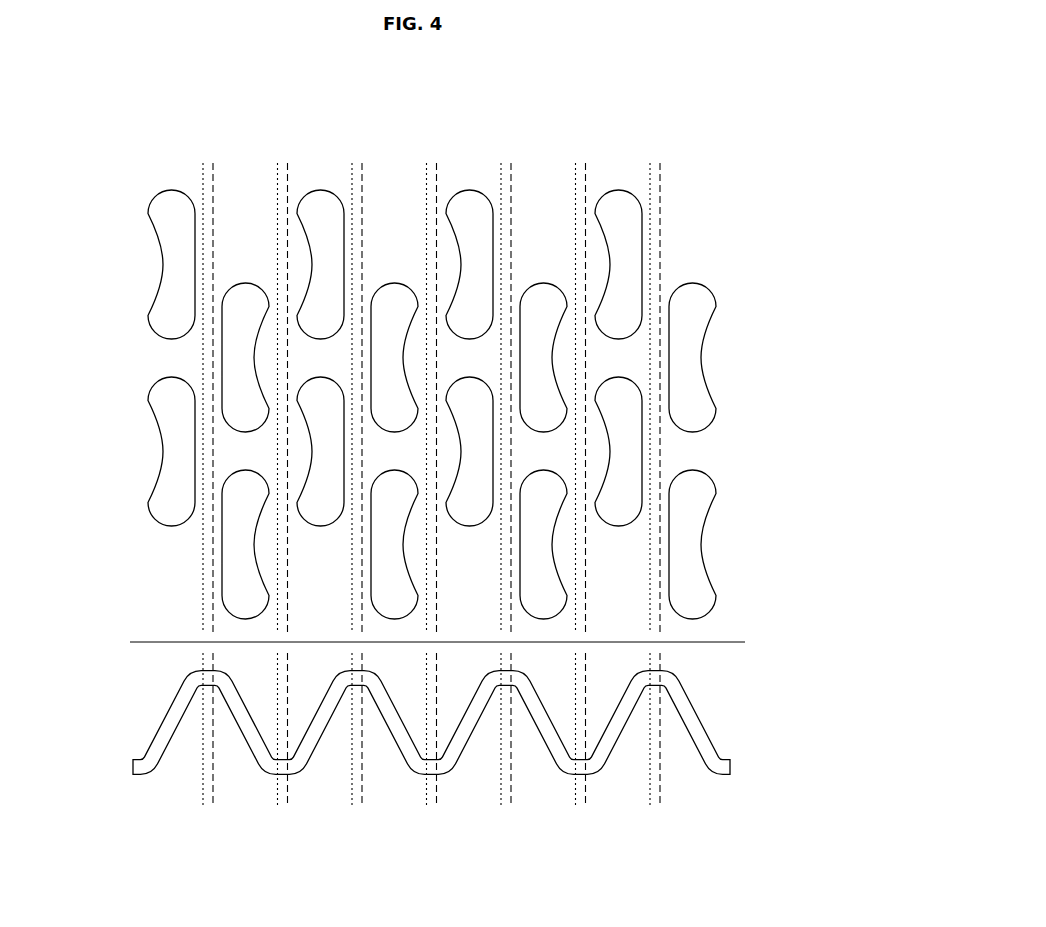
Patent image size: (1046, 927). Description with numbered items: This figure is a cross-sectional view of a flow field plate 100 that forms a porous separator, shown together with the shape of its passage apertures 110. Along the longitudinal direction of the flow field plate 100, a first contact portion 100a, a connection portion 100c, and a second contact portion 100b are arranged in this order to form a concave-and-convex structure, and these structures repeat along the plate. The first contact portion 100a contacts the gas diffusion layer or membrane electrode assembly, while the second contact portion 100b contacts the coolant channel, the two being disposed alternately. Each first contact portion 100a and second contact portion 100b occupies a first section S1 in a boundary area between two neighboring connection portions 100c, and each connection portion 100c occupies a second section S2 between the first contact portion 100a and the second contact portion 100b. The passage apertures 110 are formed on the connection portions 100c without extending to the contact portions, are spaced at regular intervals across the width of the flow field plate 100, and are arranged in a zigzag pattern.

The flow field plate 100 is at (160, 697).
The first contact portion 100a is at (283, 769).
The second contact portion 100b is at (207, 669).
The connection portion 100c is at (253, 733).
The passage aperture 110 is at (255, 301).
The first section S1 is at (228, 795).
The second section S2 is at (352, 795).